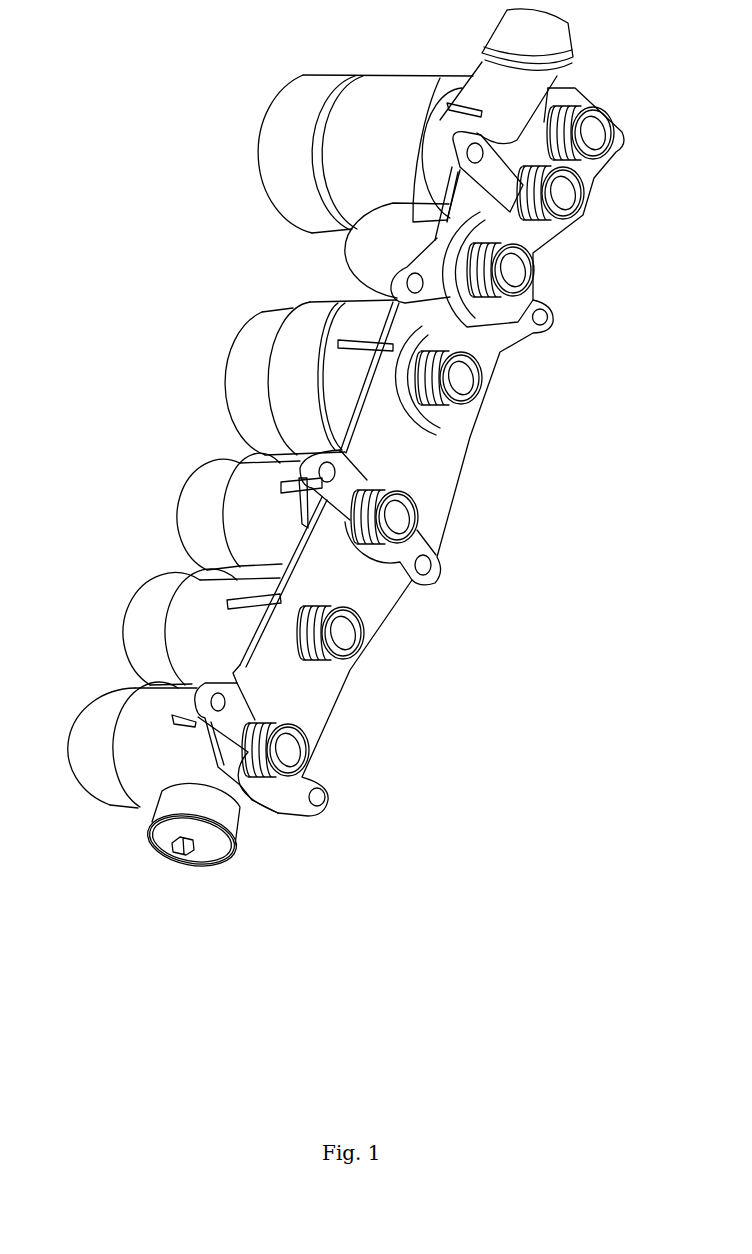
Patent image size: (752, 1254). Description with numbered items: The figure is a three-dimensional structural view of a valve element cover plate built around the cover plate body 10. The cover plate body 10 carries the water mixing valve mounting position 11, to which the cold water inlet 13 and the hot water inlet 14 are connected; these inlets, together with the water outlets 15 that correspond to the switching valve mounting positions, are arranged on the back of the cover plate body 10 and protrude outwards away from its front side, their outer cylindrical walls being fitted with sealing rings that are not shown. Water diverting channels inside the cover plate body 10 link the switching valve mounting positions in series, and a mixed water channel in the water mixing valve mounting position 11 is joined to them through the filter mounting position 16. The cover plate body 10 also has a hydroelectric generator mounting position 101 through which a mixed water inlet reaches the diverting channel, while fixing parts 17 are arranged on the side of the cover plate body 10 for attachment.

The cover plate body 10 is at (320, 545).
The water mixing valve mounting position 11 is at (377, 132).
The cold water inlet 13 is at (565, 192).
The hot water inlet 14 is at (592, 133).
The water outlets 15 is at (288, 750).
The filter mounting position 16 is at (380, 248).
The fixing parts 17 is at (423, 565).
The hydroelectric generator mounting position 101 is at (297, 352).